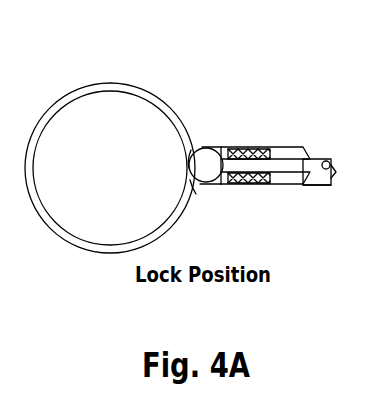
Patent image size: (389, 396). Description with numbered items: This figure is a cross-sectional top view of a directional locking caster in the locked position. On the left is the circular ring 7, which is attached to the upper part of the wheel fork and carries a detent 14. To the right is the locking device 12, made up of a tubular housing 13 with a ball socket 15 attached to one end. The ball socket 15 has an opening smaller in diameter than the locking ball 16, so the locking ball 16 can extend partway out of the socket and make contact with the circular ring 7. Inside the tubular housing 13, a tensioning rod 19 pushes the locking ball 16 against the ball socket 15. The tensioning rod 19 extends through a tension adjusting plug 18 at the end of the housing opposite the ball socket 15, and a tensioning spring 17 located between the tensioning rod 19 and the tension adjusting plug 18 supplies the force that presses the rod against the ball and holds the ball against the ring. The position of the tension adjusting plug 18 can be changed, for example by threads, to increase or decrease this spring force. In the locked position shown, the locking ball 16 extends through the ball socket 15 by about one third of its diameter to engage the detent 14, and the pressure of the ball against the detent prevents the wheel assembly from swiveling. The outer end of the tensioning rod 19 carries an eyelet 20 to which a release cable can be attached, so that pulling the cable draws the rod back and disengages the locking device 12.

The circular ring 7 is at (129, 86).
The locking device 12 is at (254, 82).
The tubular housing 13 is at (252, 147).
The detent 14 is at (184, 173).
The ball socket 15 is at (191, 191).
The locking ball 16 is at (206, 140).
The tensioning spring 17 is at (242, 187).
The tension adjusting plug 18 is at (303, 188).
The tensioning rod 19 is at (306, 148).
The eyelet 20 is at (328, 178).